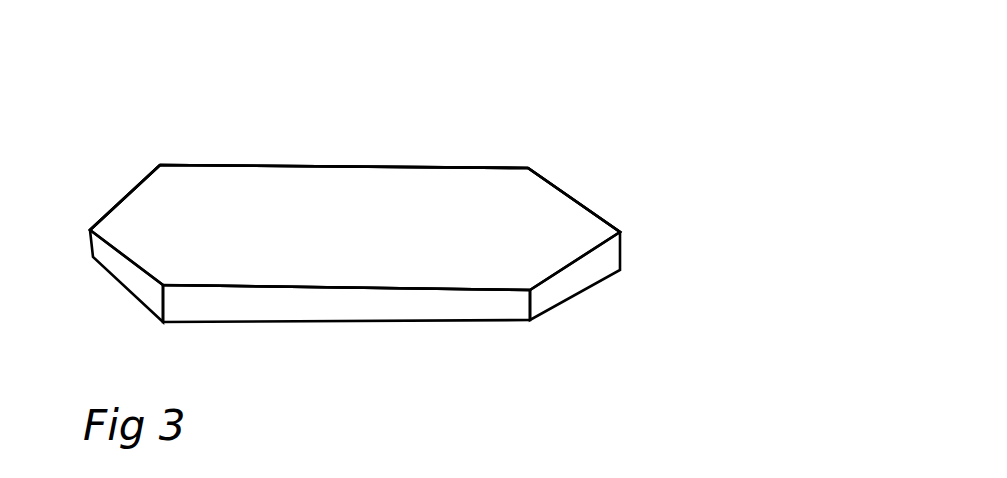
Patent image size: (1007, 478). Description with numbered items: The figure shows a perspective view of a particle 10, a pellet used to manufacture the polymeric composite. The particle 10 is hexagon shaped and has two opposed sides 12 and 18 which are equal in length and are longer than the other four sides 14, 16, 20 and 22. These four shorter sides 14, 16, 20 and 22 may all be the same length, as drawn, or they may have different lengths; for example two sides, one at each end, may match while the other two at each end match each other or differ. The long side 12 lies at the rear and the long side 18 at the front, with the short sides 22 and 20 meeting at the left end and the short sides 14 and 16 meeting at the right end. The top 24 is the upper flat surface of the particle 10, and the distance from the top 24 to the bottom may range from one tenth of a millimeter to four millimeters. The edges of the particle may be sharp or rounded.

The particle 10 is at (495, 139).
The side 12 is at (345, 168).
The side 14 is at (578, 198).
The side 16 is at (582, 276).
The side 18 is at (408, 305).
The side 20 is at (140, 283).
The side 22 is at (128, 194).
The top 24 is at (372, 244).